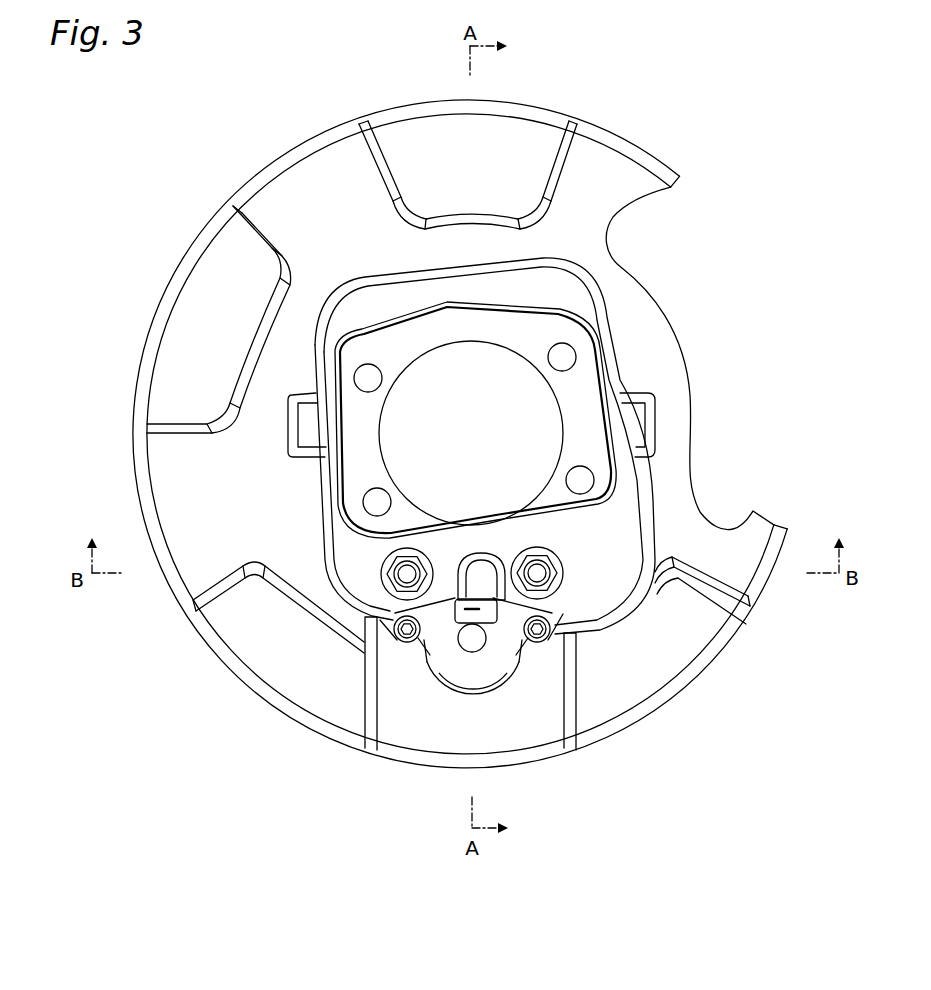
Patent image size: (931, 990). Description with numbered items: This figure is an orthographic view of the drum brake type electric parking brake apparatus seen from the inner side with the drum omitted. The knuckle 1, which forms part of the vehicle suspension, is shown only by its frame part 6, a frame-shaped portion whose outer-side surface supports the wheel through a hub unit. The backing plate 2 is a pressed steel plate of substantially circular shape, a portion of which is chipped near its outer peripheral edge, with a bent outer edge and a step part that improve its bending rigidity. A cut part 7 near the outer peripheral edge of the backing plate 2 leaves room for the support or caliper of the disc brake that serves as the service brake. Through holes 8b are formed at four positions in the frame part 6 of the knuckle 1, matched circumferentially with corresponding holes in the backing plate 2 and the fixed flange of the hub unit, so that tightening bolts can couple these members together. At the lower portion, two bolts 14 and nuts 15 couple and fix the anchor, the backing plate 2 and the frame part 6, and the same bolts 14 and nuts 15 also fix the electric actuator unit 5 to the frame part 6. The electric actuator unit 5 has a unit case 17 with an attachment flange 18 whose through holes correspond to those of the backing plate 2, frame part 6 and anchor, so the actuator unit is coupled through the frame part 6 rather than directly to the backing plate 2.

The knuckle 1 is at (548, 293).
The backing plate 2 is at (315, 200).
The electric actuator unit 5 is at (447, 655).
The frame part 6 is at (614, 522).
The cut part 7 is at (755, 510).
The through holes 8b is at (363, 376).
The bolts 14 is at (405, 578).
The nuts 15 is at (390, 574).
The unit case 17 is at (495, 657).
The attachment flange 18 is at (752, 604).